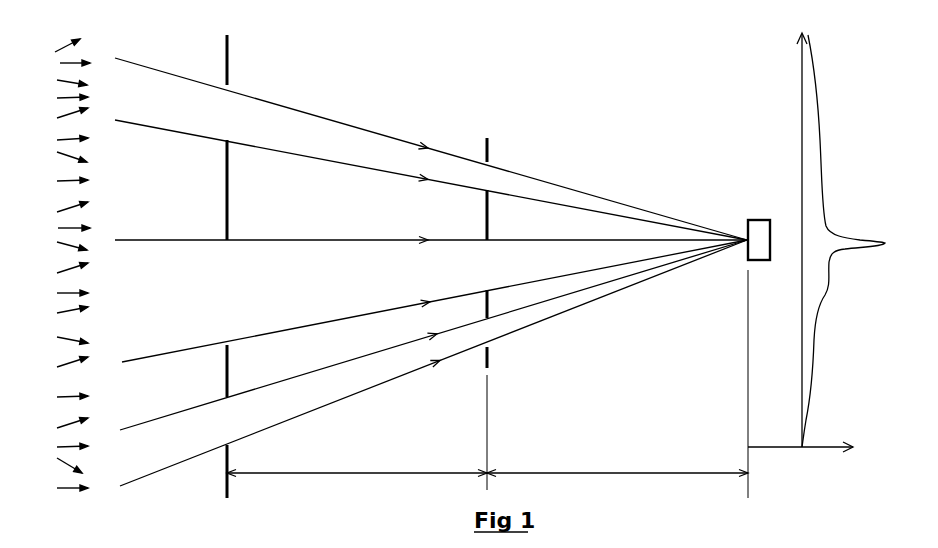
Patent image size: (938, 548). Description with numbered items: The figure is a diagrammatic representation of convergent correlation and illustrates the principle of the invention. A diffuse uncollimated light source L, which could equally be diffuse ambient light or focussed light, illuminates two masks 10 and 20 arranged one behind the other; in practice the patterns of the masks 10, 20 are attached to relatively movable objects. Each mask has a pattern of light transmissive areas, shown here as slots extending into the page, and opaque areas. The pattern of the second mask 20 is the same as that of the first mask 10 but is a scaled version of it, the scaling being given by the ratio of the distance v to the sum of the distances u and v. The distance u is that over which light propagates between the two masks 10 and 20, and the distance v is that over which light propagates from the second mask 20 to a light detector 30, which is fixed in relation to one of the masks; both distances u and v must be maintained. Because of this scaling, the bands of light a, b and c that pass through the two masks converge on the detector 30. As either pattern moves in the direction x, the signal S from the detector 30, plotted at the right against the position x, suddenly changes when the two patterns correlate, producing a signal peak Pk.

The mask 10 is at (229, 52).
The mask 20 is at (488, 147).
The light detector 30 is at (762, 232).
The light source L is at (56, 265).
The band of light a is at (431, 149).
The band of light b is at (433, 335).
The band of light c is at (433, 363).
The distance u is at (357, 462).
The distance v is at (617, 460).
The direction of movement x is at (789, 240).
The signal S is at (818, 320).
The signal peak Pk is at (885, 243).